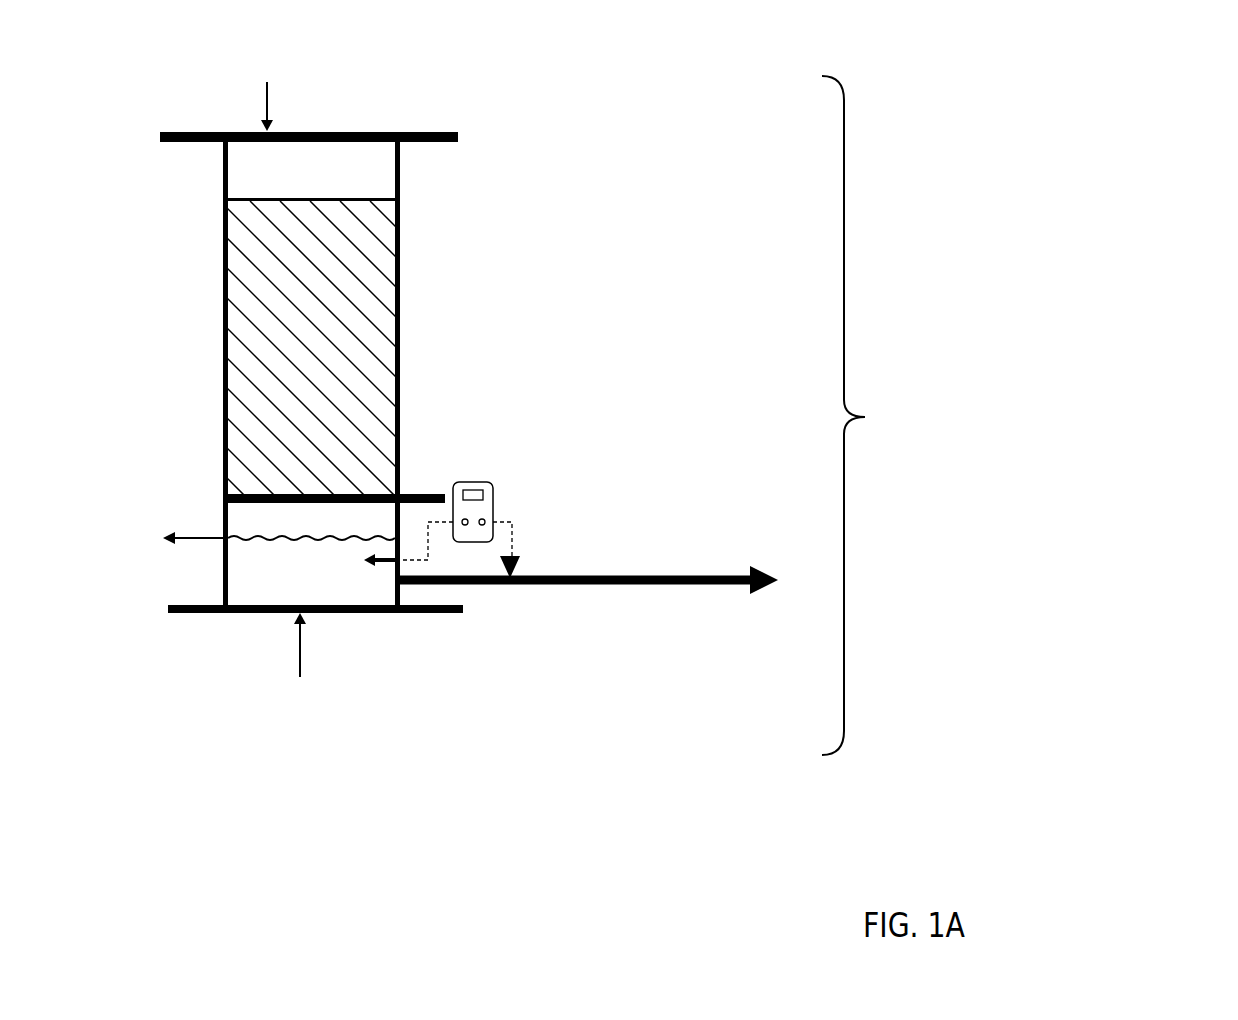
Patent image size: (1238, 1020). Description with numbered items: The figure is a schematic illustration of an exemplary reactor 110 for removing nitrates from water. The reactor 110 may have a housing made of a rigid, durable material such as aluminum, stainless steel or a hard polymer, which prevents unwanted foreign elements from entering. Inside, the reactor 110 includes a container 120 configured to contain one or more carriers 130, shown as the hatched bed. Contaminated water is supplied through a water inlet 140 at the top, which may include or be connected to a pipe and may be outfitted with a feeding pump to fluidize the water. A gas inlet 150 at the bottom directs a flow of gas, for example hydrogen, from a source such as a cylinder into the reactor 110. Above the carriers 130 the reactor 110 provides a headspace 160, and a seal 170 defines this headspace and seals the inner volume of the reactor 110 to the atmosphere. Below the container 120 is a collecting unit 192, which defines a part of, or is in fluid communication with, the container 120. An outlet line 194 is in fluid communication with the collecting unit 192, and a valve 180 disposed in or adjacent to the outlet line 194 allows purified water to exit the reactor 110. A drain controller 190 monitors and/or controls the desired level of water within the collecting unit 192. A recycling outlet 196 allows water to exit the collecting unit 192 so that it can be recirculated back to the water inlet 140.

The reactor 110 is at (1048, 413).
The container 120 is at (410, 343).
The carriers 130 is at (388, 363).
The water inlet 140 is at (262, 132).
The gas inlet 150 is at (288, 618).
The headspace 160 is at (375, 172).
The seal 170 is at (303, 132).
The valve 180 is at (510, 578).
The drain controller 190 is at (487, 487).
The collecting unit 192 is at (232, 615).
The outlet line 194 is at (400, 583).
The recycling outlet 196 is at (220, 542).